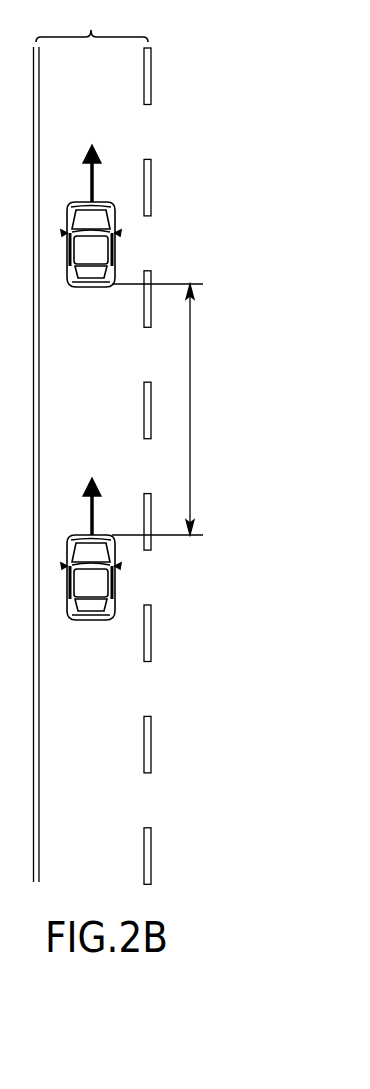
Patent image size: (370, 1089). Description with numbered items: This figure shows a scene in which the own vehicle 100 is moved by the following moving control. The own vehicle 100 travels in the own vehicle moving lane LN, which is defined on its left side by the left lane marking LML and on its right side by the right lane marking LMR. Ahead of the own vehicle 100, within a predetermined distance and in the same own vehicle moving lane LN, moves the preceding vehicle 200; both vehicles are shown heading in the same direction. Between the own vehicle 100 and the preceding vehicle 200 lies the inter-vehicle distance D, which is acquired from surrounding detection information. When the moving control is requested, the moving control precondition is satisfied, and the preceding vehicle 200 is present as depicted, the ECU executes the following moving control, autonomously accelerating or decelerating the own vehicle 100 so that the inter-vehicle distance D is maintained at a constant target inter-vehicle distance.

The own vehicle 100 is at (115, 549).
The preceding vehicle 200 is at (116, 243).
The inter-vehicle distance D is at (160, 409).
The own vehicle moving lane LN is at (92, 22).
The left lane marking LML is at (40, 63).
The right lane marking LMR is at (143, 90).